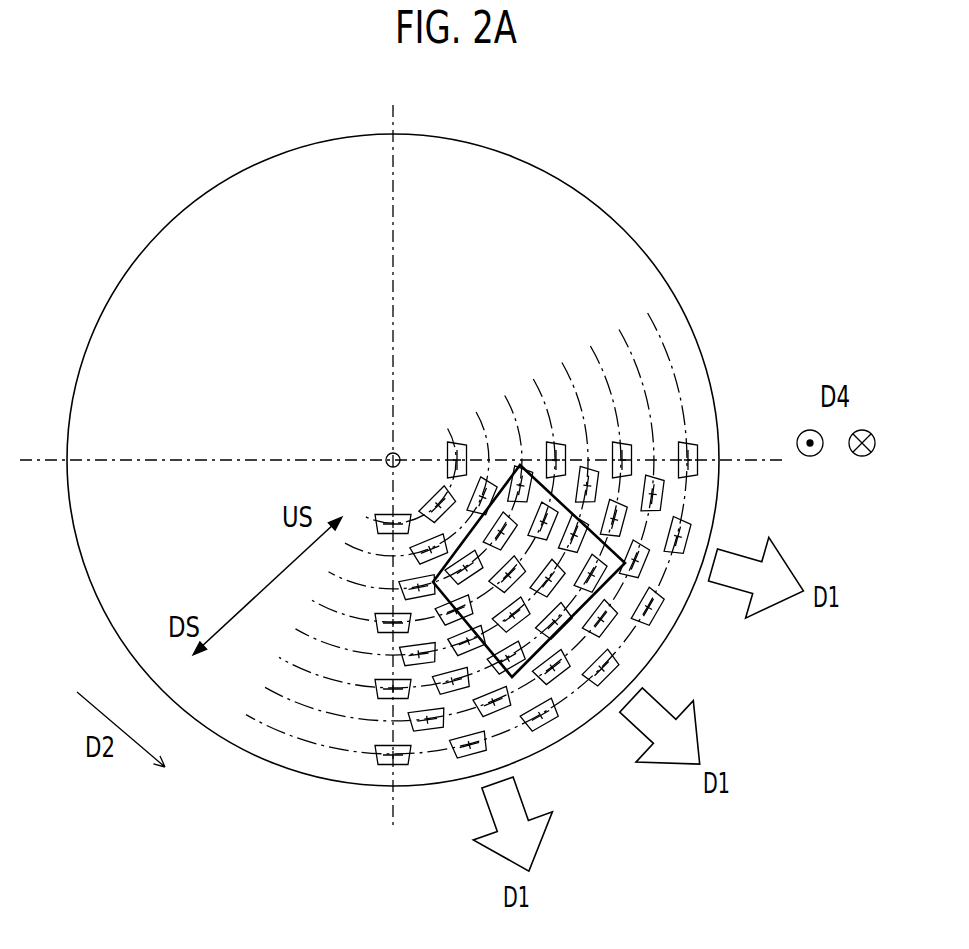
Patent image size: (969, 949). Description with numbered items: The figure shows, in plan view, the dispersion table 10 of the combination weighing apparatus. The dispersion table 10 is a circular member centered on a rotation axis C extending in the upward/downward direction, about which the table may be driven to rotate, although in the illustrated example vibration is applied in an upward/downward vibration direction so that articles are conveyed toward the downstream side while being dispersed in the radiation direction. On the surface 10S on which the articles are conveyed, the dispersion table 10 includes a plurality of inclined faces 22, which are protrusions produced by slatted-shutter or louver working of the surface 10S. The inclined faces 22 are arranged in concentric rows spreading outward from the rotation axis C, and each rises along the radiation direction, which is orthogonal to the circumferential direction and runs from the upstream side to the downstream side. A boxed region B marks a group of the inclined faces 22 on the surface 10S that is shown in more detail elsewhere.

The dispersion table 10 is at (670, 183).
The surface 10S is at (646, 640).
The inclined faces 22 is at (630, 446).
The region B (enlarged area) B is at (537, 652).
The rotation axis C is at (383, 445).